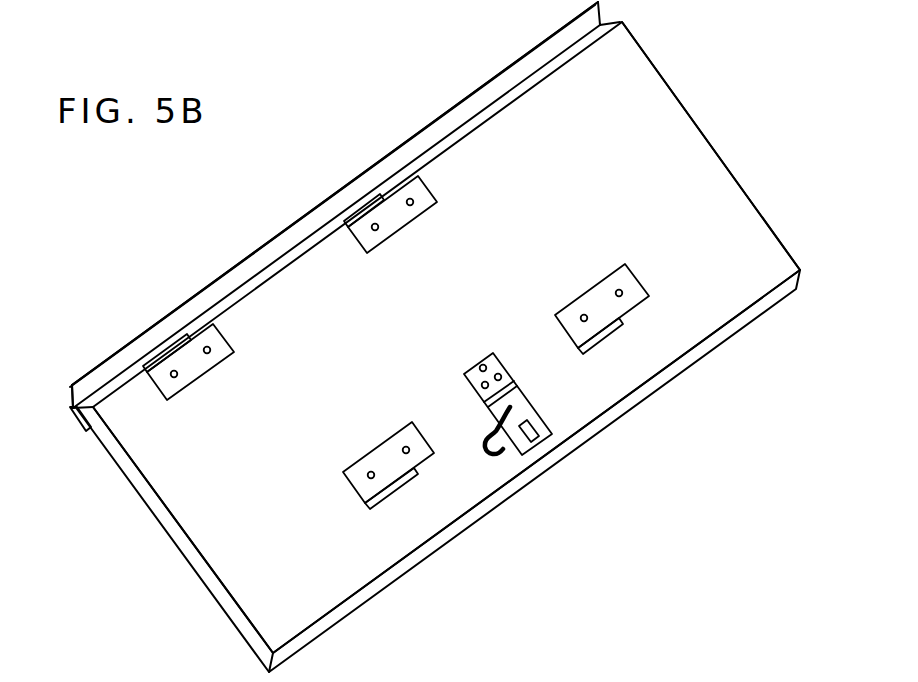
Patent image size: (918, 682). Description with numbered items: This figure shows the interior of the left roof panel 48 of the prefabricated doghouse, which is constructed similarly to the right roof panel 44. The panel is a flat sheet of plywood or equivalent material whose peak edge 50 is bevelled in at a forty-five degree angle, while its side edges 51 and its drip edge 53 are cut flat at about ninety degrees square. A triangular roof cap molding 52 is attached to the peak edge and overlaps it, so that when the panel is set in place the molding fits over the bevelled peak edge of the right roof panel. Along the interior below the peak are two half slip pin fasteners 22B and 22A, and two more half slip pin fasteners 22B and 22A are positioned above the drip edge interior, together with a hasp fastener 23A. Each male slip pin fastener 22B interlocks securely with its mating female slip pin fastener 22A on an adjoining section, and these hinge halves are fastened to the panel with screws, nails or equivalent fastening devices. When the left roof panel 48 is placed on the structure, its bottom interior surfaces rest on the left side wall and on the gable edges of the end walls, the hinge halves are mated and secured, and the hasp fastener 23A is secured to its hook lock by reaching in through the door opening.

The right roof panel 44 is at (435, 351).
The left roof panel 48 is at (512, 54).
The peak edge 50 is at (252, 246).
The side edges 51 is at (446, 337).
The triangular roof cap molding 52 is at (55, 370).
The drip edge 53 is at (518, 505).
The female slip pin fastener 22A is at (508, 276).
The male slip pin fastener 22B is at (304, 415).
The hasp fastener 23A is at (548, 438).